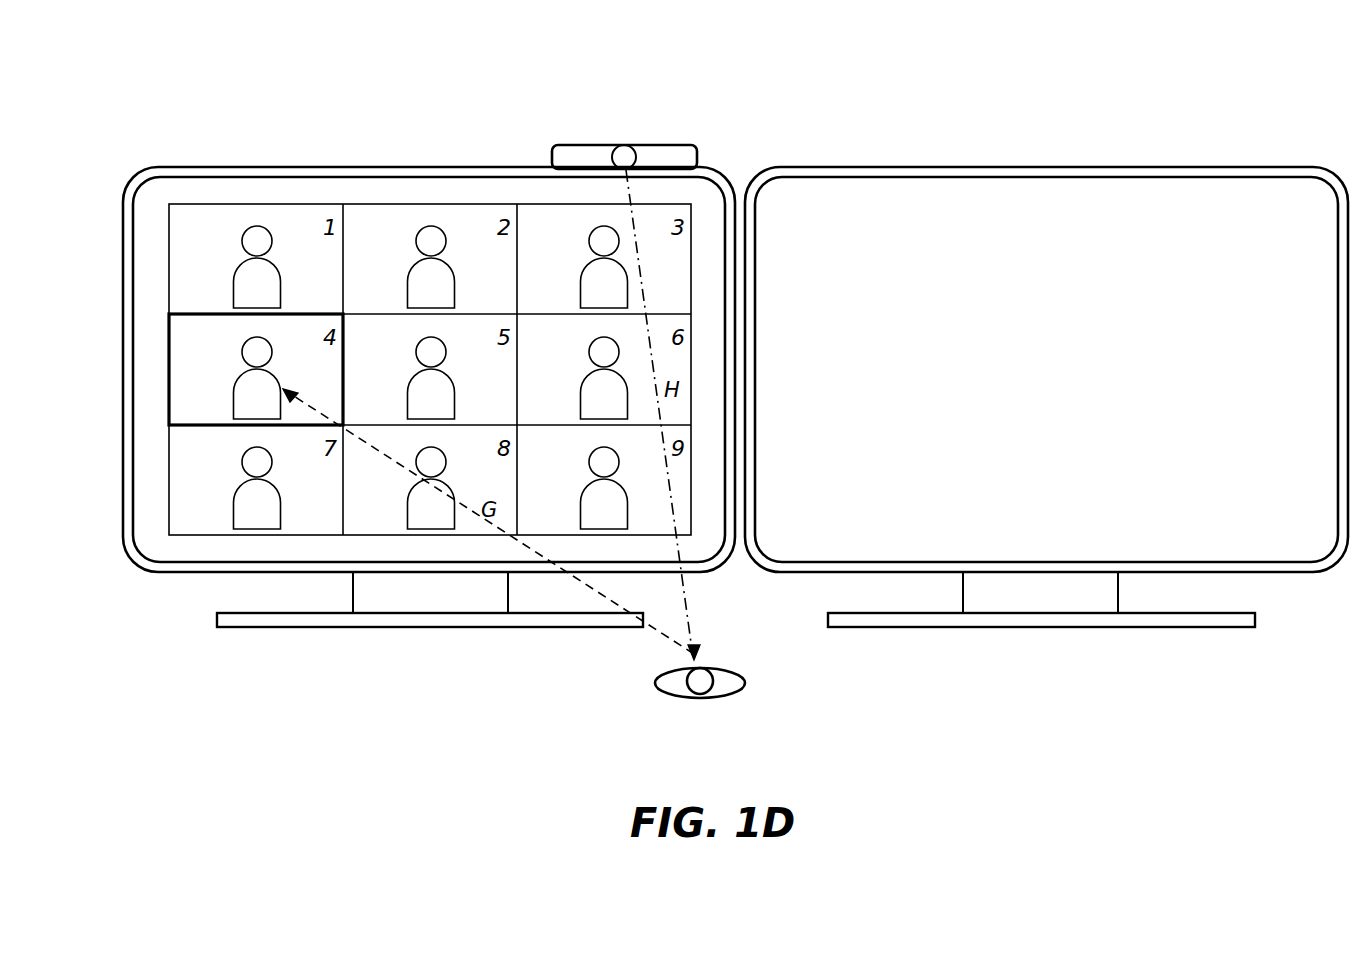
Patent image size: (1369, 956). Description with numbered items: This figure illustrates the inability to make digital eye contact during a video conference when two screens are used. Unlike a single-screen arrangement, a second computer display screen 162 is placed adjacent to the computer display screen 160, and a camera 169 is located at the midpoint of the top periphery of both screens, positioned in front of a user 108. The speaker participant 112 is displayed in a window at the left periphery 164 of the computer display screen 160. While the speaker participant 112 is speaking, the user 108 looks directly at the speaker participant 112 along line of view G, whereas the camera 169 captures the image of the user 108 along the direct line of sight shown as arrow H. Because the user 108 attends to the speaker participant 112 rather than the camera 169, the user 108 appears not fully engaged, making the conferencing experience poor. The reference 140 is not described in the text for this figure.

The computer display screen 160 is at (499, 104).
The left periphery 164 is at (122, 251).
The camera 169 is at (628, 124).
The second display device 140 is at (738, 163).
The second computer display screen 162 is at (1238, 166).
The speaker participant 112 is at (234, 395).
The user 108 is at (242, 466).